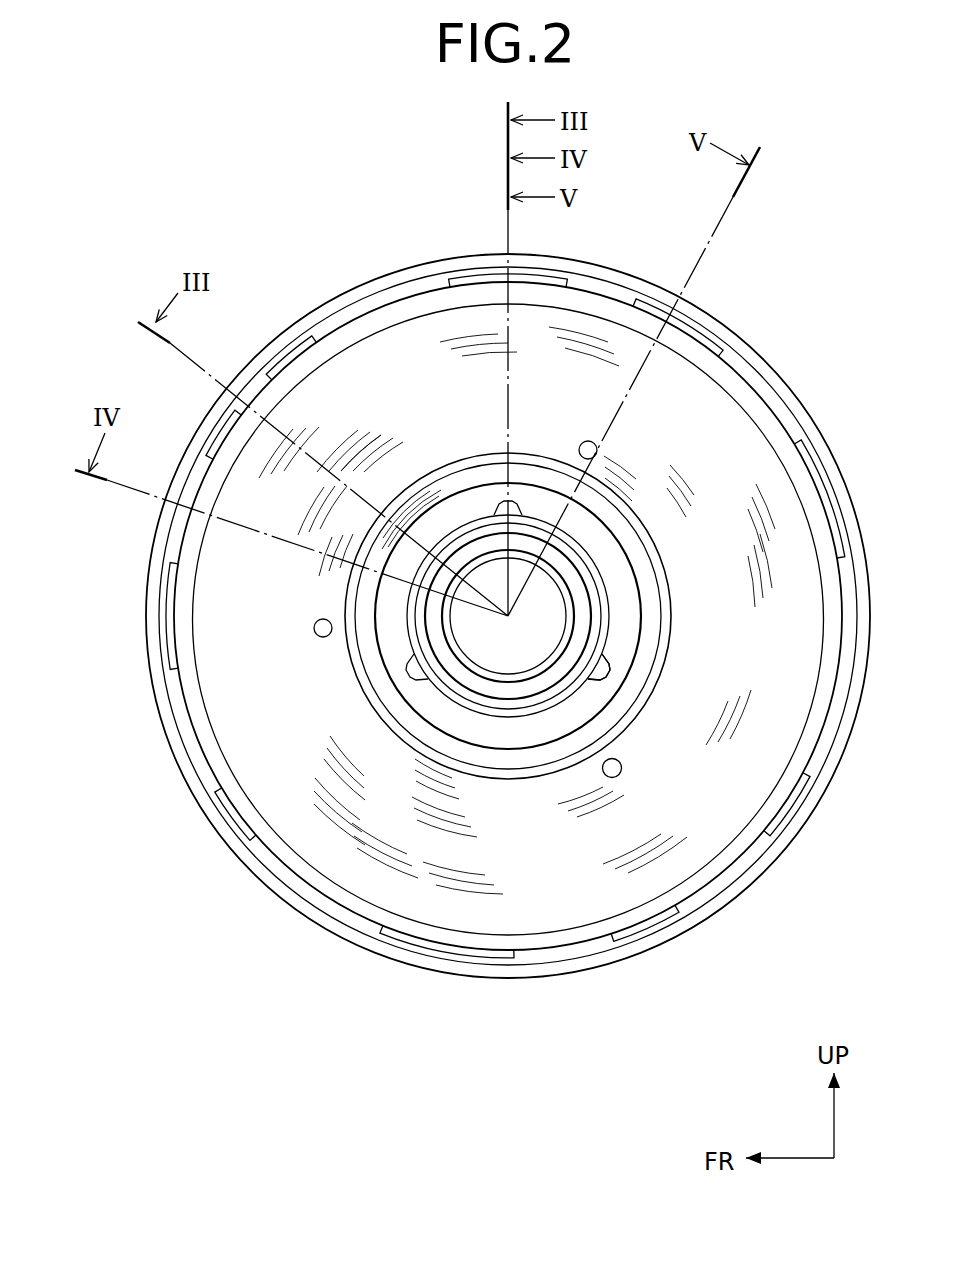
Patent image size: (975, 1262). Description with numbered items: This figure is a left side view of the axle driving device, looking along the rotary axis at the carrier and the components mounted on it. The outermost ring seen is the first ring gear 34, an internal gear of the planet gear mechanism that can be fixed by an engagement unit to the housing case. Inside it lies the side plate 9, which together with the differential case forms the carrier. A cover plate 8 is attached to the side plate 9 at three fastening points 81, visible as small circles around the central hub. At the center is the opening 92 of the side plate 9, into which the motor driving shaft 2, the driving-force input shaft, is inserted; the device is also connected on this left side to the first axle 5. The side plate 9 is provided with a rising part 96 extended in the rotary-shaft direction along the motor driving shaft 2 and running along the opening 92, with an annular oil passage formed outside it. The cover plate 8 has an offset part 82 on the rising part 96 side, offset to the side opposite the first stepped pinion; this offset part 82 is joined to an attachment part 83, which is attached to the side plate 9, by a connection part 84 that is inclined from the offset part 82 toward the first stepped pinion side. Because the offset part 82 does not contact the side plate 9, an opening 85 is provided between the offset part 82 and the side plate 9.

The motor driving shaft 2 is at (525, 690).
The first axle 5 is at (500, 648).
The cover plate 8 is at (753, 601).
The side plate 9 is at (617, 643).
The first ring gear 34 is at (773, 373).
The fastening points 81 is at (581, 442).
The offset part 82 is at (413, 723).
The attachment part 83 is at (262, 642).
The connection part 84 is at (363, 678).
The opening 85 is at (618, 540).
The opening 92 is at (563, 690).
The rising part 96 is at (580, 683).